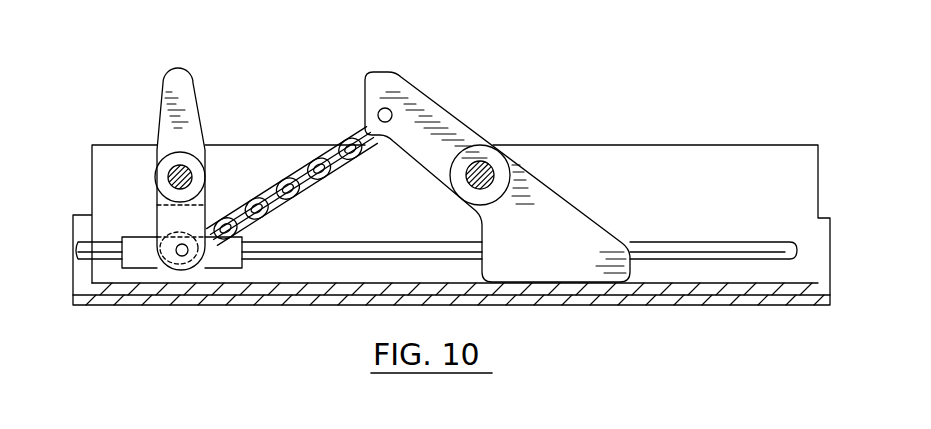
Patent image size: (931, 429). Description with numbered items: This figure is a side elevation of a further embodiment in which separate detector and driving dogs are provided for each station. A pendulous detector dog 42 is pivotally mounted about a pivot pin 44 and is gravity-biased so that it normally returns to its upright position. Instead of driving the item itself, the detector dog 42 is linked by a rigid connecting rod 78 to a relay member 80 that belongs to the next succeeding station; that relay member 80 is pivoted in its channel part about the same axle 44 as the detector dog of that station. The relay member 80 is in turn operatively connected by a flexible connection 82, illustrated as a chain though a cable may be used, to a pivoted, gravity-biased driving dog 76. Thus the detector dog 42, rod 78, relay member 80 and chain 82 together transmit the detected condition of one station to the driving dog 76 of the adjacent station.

The detector dog 42 is at (166, 78).
The pivot pin 44 is at (195, 172).
The driving dog 76 is at (427, 96).
The connecting rod 78 is at (100, 247).
The relay member 80 is at (163, 160).
The flexible connection 82 is at (313, 163).